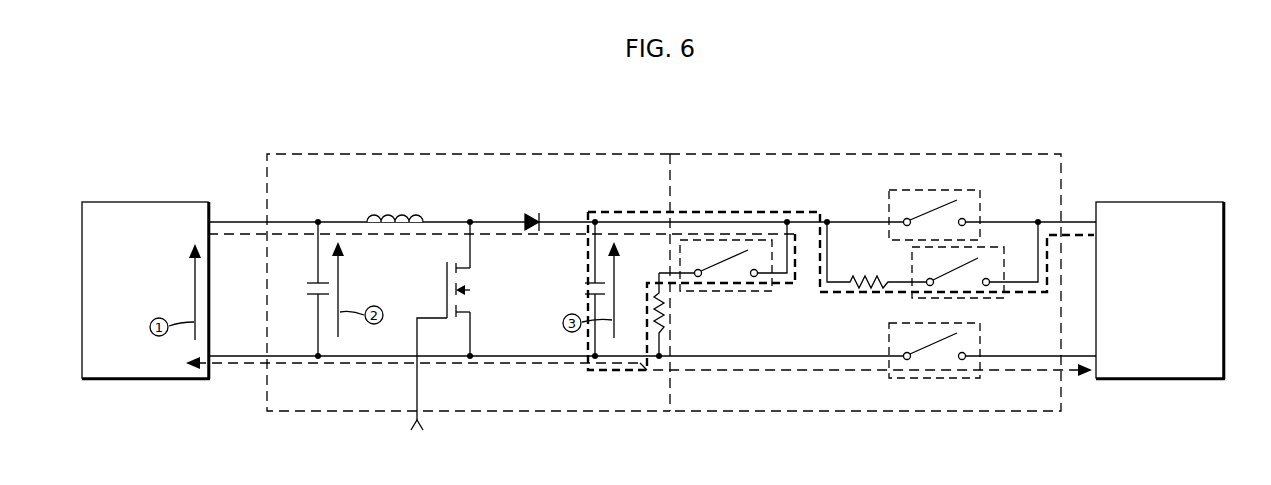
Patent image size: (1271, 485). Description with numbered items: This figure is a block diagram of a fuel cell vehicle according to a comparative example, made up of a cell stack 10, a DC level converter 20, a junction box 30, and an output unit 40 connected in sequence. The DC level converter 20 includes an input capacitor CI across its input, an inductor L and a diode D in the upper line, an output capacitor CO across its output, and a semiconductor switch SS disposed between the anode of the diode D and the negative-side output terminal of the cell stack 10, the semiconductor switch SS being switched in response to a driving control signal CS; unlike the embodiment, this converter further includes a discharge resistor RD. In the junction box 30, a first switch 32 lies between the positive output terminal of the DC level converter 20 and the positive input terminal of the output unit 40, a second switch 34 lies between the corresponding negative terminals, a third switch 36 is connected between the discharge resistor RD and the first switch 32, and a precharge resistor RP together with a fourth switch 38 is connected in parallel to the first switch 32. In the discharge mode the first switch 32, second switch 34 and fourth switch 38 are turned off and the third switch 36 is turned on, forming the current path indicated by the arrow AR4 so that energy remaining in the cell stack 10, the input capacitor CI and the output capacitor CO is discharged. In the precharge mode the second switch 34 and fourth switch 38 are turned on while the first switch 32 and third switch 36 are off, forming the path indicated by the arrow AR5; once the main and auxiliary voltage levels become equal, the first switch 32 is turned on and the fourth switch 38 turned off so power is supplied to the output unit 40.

The cell stack 10 is at (173, 202).
The DC level converter 20 is at (514, 154).
The junction box 30 is at (854, 154).
The first switch 32 is at (963, 190).
The second switch 34 is at (965, 378).
The third switch 36 is at (756, 291).
The fourth switch 38 is at (991, 298).
The output unit 40 is at (1180, 202).
The inductor L is at (395, 205).
The diode D is at (532, 209).
The input capacitor CI is at (308, 289).
The output capacitor CO is at (579, 289).
The semiconductor switch SS is at (474, 289).
The driving control signal CS is at (426, 384).
The discharge resistor RD is at (672, 314).
The precharge resistor RP is at (876, 255).
The arrow indicating discharge current path AR4 is at (222, 368).
The arrow indicating precharge current path AR5 is at (1072, 233).